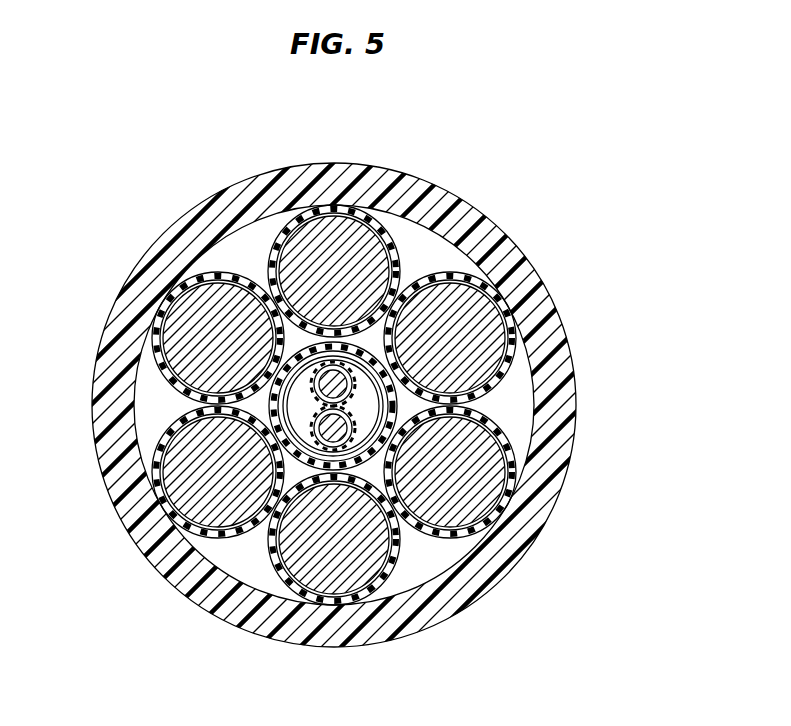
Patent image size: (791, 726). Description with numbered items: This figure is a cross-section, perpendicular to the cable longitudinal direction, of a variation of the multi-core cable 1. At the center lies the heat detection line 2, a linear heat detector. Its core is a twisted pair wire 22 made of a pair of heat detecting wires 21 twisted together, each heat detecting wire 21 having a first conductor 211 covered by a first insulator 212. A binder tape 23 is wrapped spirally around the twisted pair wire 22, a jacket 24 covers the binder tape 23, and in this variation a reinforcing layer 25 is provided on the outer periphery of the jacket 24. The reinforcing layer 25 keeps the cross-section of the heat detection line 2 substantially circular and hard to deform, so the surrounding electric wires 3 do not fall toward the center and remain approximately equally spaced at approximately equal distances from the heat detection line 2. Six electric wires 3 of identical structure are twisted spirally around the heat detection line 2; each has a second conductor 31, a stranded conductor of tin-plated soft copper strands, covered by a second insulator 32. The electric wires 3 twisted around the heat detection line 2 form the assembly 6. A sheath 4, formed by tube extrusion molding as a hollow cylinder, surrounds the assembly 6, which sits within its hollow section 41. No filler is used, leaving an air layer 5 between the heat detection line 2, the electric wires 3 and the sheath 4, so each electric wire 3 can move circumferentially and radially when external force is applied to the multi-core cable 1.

The multi-core cable 1 is at (145, 163).
The heat detection line 2 is at (402, 405).
The heat detecting wire 21 is at (593, 189).
The first conductor 211 is at (345, 377).
The first insulator 212 is at (352, 389).
The twisted pair wire 22 is at (357, 401).
The binder tape 23 is at (370, 411).
The jacket 24 is at (384, 419).
The reinforcing layer 25 is at (393, 431).
The electric wire 3 is at (438, 273).
The second conductor 31 is at (482, 462).
The second insulator 32 is at (510, 471).
The sheath 4 is at (517, 543).
The hollow section 41 is at (445, 548).
The air layer 5 is at (170, 412).
The assembly 6 is at (279, 229).